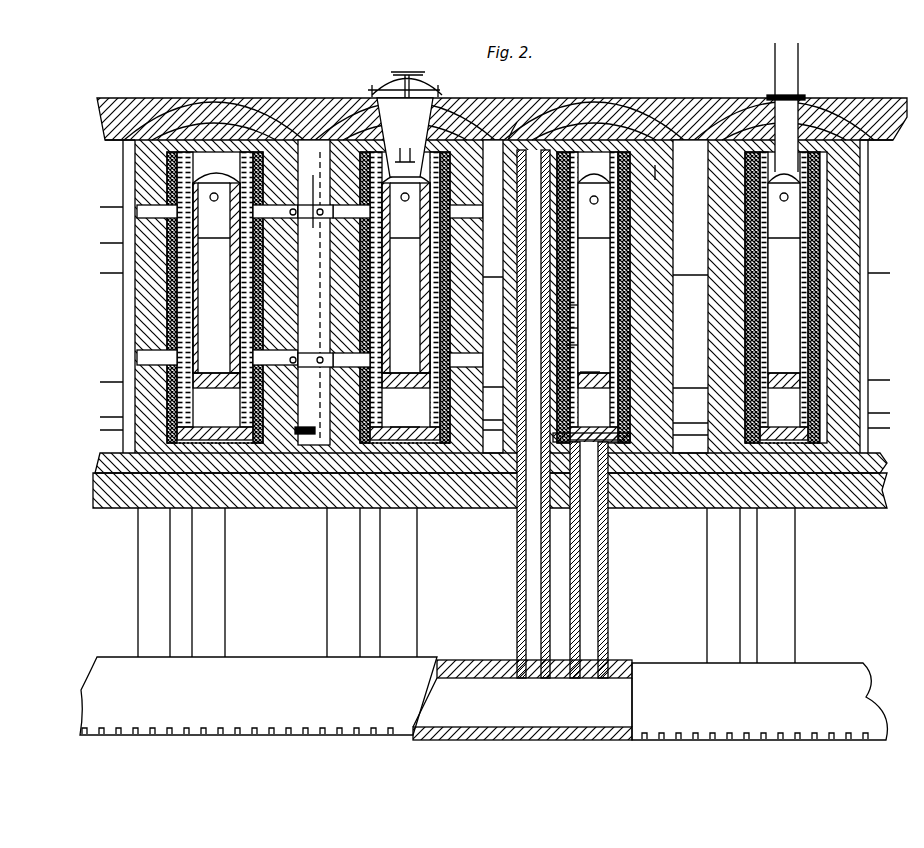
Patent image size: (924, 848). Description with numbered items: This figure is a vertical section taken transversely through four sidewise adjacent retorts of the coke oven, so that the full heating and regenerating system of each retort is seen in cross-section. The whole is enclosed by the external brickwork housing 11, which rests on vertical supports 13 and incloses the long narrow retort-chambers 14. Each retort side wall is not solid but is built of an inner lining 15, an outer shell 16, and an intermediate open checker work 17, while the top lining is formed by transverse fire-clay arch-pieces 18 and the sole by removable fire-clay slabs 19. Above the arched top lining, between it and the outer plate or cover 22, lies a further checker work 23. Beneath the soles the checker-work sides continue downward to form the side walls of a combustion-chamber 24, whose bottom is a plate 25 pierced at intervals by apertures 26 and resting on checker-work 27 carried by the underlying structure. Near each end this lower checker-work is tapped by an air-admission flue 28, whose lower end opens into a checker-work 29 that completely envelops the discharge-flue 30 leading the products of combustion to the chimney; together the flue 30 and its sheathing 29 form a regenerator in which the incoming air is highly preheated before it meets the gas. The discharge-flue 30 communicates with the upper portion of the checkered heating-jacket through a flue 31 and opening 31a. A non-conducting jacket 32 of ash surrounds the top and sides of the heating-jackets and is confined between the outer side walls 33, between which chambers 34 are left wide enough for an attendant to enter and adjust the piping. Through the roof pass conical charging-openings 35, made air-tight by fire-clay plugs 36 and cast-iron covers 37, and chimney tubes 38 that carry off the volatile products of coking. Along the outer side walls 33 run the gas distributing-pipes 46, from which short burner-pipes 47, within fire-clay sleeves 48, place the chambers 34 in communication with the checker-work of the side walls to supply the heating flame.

The external housing 11 is at (688, 102).
The vertical supports 13 is at (337, 598).
The retort-chamber 14 is at (496, 273).
The inner lining 15 is at (572, 313).
The outer shell 16 is at (572, 331).
The intermediate checker-work 17 is at (568, 347).
The arch-pieces 18 is at (588, 186).
The fire-clay slabs 19 is at (586, 374).
The outer plate 22 is at (570, 153).
The top checker-work 23 is at (212, 155).
The combustion-chamber 24 is at (494, 406).
The bottom plates 25 is at (405, 421).
The apertures 26 is at (493, 408).
The underlying checker-work 27 is at (240, 452).
The air-admission flue 28 is at (596, 548).
The regenerator checker-work 29 is at (488, 659).
The discharge-flue 30 is at (522, 709).
The connecting flue 31 is at (533, 545).
The opening 31a is at (523, 120).
The non-conducting jacket 32 is at (655, 170).
The outer side walls 33 is at (500, 292).
The chambers 34 is at (318, 178).
The charging-openings 35 is at (405, 137).
The fire-clay plugs 36 is at (405, 147).
The cast-iron covers 37 is at (393, 97).
The chimney tube 38 is at (790, 118).
The distributing-pipes 46 is at (290, 300).
The burner-pipes 47 is at (280, 197).
The fire-clay sleeves 48 is at (338, 376).